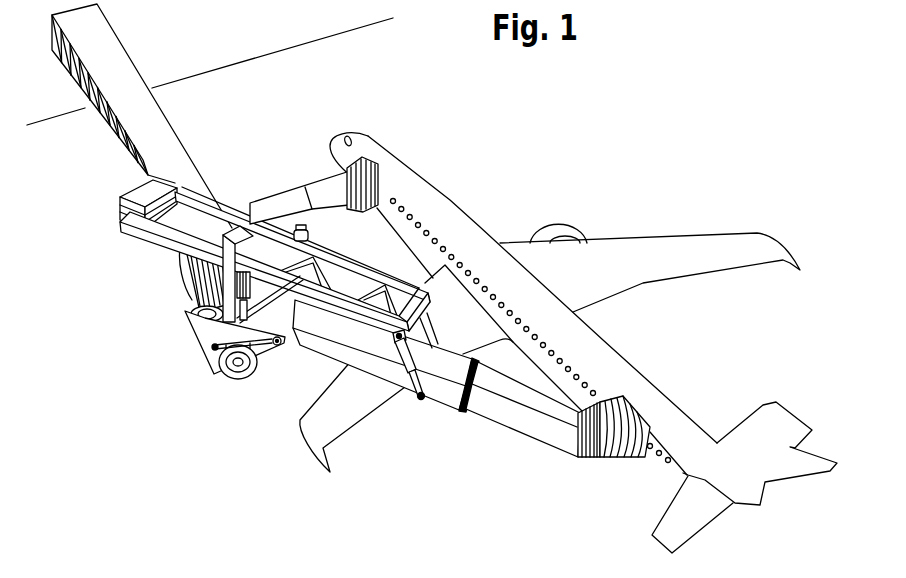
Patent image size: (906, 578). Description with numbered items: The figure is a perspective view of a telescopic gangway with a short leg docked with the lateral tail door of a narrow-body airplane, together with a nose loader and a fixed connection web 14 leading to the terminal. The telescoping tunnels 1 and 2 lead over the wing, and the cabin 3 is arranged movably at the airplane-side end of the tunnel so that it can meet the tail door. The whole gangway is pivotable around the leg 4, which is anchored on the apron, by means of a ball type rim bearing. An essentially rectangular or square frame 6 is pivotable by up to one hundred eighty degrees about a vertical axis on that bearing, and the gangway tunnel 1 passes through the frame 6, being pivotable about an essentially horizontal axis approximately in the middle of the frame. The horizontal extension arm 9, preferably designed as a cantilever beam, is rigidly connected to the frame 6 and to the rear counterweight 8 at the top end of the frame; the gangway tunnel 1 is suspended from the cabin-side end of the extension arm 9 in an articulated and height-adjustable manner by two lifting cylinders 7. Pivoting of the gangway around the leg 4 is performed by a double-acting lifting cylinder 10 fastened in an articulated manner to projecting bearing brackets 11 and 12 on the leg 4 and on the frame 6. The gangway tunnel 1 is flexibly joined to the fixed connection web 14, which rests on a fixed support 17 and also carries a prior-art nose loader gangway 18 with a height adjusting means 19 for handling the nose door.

The gangway tunnel 1 is at (450, 392).
The telescoping tunnel 2 is at (523, 420).
The cabin 3 is at (608, 448).
The leg 4 is at (225, 370).
The frame 6 is at (250, 224).
The lifting cylinders 7 is at (397, 374).
The rear counterweight 8 is at (119, 234).
The extension arm 9 is at (345, 304).
The lifting cylinder 10 is at (238, 380).
The bearing bracket 11 is at (213, 348).
The bearing bracket 12 is at (277, 346).
The fixed connection web 14 is at (157, 134).
The fixed support 17 is at (194, 316).
The nose loader gangway 18 is at (282, 198).
The height adjusting means 19 is at (310, 235).